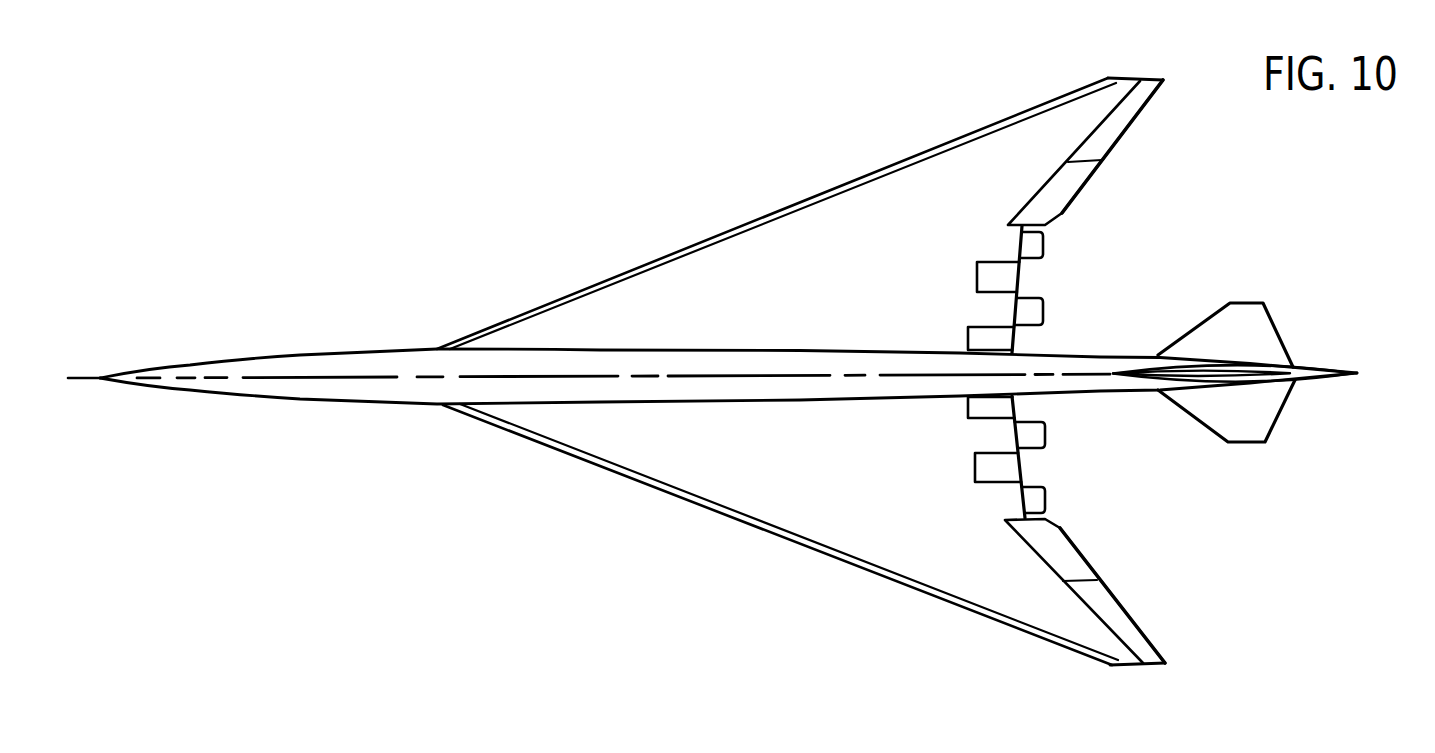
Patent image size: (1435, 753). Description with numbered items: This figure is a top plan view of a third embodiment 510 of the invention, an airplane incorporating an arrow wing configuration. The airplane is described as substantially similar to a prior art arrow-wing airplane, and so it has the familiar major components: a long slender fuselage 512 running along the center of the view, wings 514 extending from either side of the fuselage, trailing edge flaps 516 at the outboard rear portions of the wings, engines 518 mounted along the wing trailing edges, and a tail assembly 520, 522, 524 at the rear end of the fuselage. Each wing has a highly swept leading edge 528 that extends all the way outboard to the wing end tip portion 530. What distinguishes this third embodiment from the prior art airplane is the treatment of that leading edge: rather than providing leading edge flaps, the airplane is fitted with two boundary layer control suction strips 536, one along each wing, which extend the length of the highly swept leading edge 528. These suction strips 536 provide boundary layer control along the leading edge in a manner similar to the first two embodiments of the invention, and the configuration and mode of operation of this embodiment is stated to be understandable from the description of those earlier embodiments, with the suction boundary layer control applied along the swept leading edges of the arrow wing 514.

The third embodiment 510 is at (387, 303).
The fuselage 512 is at (357, 360).
The wings 514 is at (733, 275).
The trailing edge flaps 516 is at (1068, 187).
The engines 518 is at (1038, 309).
The tail assembly 520 is at (1276, 296).
The tail assembly component 522 is at (1258, 328).
The tail assembly component 524 is at (1247, 370).
The highly swept leading edge 528 is at (598, 292).
The wing end tip portion 530 is at (1133, 77).
The boundary layer control suction strips 536 is at (637, 272).